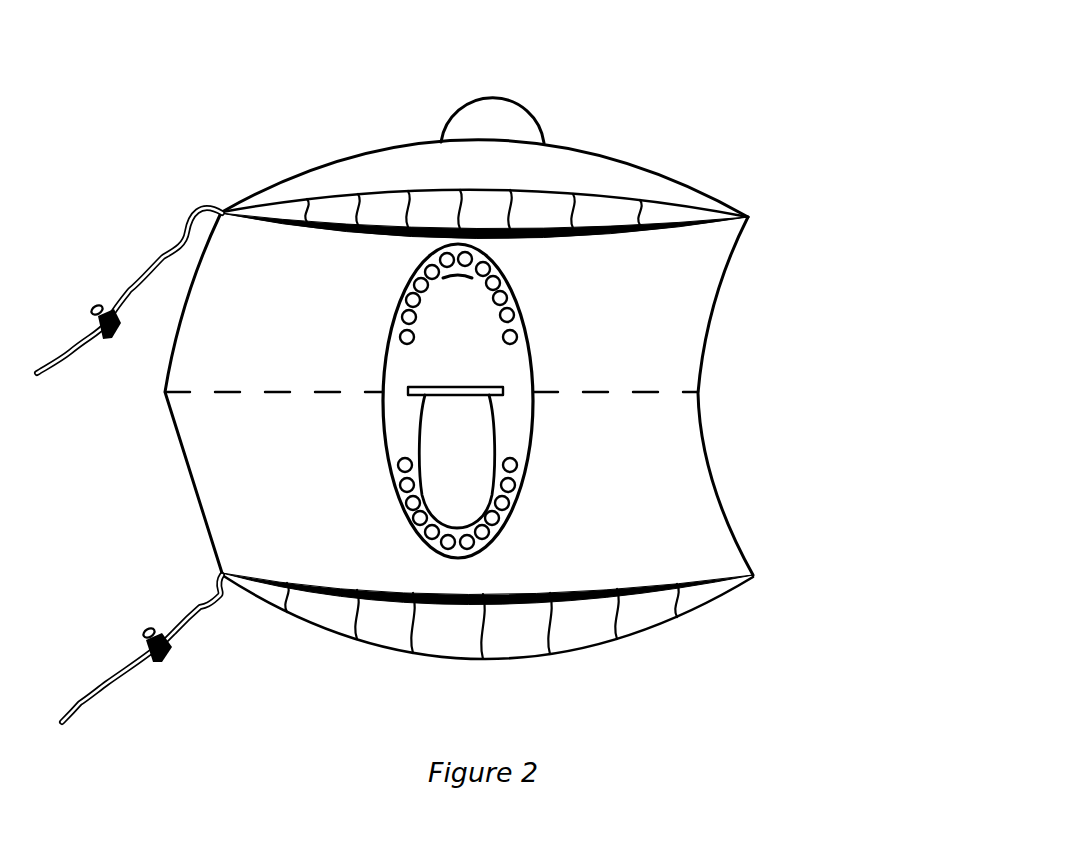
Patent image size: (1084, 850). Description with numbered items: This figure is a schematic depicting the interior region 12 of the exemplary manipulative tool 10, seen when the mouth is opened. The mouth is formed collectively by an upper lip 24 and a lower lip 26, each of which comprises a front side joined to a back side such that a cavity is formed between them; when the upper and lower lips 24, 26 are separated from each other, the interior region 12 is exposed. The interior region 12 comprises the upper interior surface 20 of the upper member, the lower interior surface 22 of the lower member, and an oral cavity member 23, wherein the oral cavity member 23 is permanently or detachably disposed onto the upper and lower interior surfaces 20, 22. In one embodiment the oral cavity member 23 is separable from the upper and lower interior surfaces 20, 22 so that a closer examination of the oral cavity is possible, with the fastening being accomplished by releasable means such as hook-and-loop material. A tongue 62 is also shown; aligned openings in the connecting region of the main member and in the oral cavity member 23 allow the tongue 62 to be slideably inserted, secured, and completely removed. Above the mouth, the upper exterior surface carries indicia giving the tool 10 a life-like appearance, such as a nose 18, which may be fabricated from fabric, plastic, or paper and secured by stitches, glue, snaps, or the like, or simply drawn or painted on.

The manipulative tool 10 is at (445, 365).
The interior region 12 is at (509, 395).
The nose 18 is at (508, 117).
The upper interior surface 20 is at (697, 260).
The lower interior surface 22 is at (687, 535).
The oral cavity member 23 is at (568, 372).
The upper lip 24 is at (682, 212).
The lower lip 26 is at (712, 606).
The tongue 62 is at (472, 445).